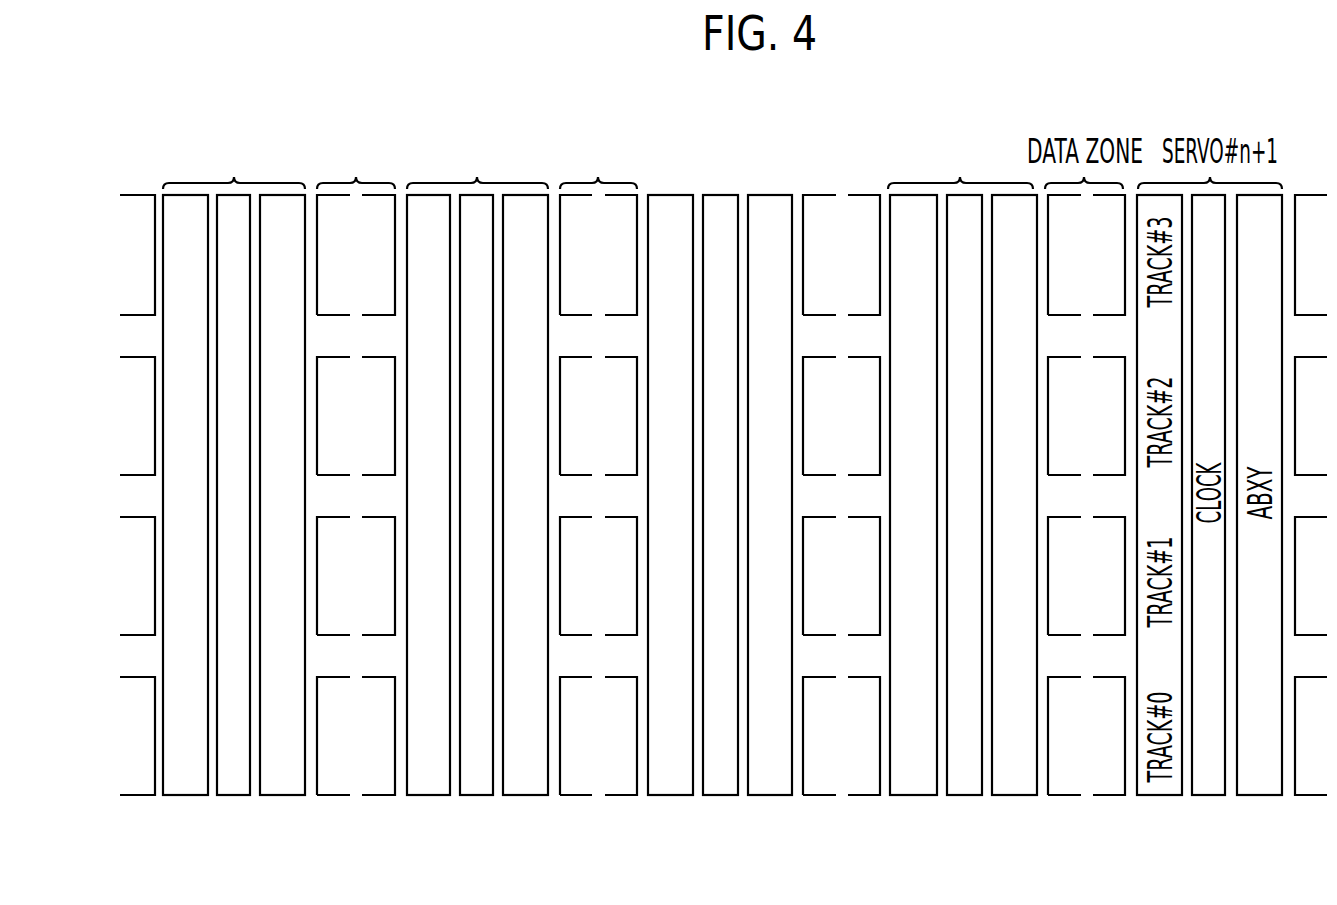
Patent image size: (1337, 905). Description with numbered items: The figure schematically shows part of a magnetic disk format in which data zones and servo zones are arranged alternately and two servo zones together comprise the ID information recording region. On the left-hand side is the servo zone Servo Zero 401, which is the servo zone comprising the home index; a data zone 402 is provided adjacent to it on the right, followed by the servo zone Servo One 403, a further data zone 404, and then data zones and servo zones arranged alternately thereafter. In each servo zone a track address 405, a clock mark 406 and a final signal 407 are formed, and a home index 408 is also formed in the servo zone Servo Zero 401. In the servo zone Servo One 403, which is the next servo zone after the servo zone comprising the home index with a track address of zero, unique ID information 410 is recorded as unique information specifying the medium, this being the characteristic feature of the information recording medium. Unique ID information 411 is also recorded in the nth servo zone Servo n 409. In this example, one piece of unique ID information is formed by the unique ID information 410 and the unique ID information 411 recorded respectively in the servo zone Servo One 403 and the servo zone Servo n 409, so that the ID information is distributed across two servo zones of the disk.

The servo zone [Servo #0] 401 is at (233, 135).
The data zone 402 is at (355, 135).
The servo zone [Servo #1] 403 is at (477, 135).
The data zone 404 is at (598, 135).
The track address 405 is at (668, 796).
The clock mark 406 is at (722, 796).
The final signal 407 is at (775, 796).
The home index 408 is at (188, 796).
The servo zone [Servo #n] 409 is at (960, 135).
The unique ID information 410 is at (428, 796).
The unique ID information 411 is at (920, 796).